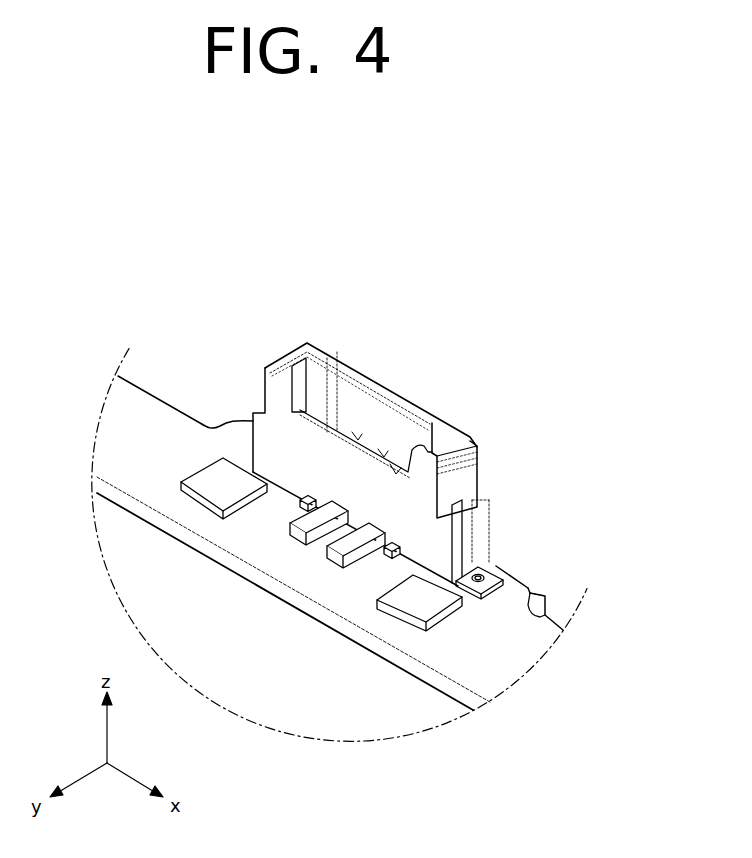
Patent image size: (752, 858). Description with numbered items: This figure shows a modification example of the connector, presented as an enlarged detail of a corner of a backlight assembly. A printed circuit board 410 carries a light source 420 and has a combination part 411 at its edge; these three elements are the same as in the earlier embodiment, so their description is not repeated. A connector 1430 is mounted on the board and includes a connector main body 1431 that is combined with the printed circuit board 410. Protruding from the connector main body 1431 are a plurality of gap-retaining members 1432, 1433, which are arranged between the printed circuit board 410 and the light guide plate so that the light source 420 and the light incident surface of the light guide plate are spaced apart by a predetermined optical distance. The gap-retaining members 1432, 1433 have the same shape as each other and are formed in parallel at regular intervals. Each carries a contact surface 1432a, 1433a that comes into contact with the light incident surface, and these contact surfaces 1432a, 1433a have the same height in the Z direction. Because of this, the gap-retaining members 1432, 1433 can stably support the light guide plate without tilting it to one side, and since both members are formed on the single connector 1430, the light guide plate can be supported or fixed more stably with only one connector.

The printed circuit board 410 is at (510, 660).
The combination part 411 is at (528, 590).
The light source 420 is at (218, 492).
The connector 1430 is at (406, 400).
The connector main body 1431 is at (476, 468).
The gap-retaining member 1432 is at (303, 547).
The contact surface 1432a is at (300, 508).
The gap-retaining member 1433 is at (325, 560).
The contact surface 1433a is at (386, 556).